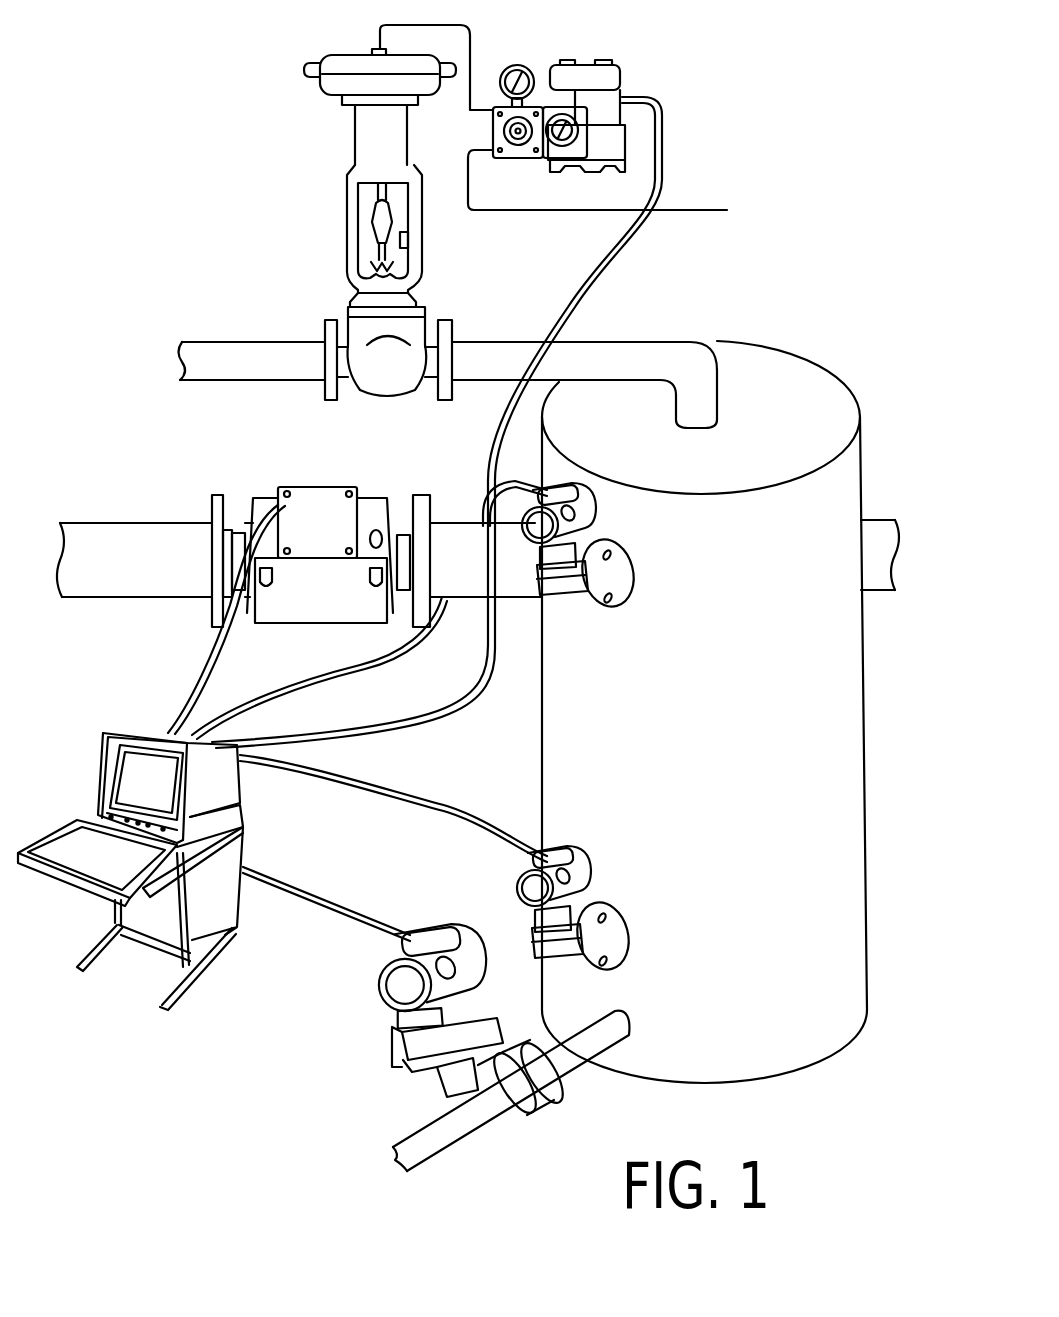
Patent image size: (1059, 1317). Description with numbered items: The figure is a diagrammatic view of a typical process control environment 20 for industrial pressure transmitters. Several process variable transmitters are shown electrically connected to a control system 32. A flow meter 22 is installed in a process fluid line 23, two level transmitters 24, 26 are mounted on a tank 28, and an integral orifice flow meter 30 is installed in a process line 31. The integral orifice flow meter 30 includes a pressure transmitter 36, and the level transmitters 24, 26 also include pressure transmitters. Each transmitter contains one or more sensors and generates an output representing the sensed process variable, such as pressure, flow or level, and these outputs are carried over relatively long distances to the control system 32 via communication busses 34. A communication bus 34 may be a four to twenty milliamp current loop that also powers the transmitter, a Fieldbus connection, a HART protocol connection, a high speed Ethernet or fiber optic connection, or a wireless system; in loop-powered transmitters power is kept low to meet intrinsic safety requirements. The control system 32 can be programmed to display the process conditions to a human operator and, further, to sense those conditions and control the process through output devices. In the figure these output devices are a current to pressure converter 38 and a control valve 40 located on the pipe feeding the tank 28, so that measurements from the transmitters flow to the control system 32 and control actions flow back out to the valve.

The process control system 20 is at (150, 288).
The flow meter 22 is at (337, 530).
The process fluid line 23 is at (157, 570).
The level transmitter 24 is at (616, 577).
The level transmitter 26 is at (600, 946).
The tank 28 is at (772, 717).
The integral orifice flow meter 30 is at (380, 1069).
The process line 31 is at (452, 1128).
The control system 32 is at (128, 730).
The communication bus 34 is at (200, 653).
The pressure transmitter 36 is at (380, 968).
The current to pressure converter 38 is at (624, 84).
The control valve 40 is at (340, 228).